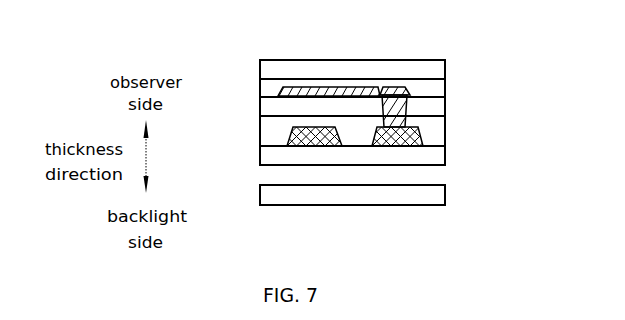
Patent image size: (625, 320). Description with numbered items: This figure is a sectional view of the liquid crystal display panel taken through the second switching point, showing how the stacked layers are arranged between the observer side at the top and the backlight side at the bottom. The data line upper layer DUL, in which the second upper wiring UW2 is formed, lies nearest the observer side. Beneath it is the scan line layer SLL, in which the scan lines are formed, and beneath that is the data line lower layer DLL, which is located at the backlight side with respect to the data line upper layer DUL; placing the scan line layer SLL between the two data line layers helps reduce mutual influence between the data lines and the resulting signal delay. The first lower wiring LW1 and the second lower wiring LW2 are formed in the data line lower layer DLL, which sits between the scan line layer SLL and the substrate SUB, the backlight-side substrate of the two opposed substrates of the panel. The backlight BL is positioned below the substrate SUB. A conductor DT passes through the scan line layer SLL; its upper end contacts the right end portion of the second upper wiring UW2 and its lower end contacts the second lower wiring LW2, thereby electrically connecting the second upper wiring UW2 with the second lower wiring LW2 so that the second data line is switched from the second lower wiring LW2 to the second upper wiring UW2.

The second upper wiring UW2 is at (388, 57).
The data line upper layer DUL is at (407, 72).
The scan line layer SLL is at (404, 98).
The data line lower layer DLL is at (405, 124).
The substrate SUB is at (406, 147).
The backlight BL is at (404, 190).
The first lower wiring LW1 is at (277, 185).
The second lower wiring LW2 is at (427, 184).
The conductor DT is at (362, 176).